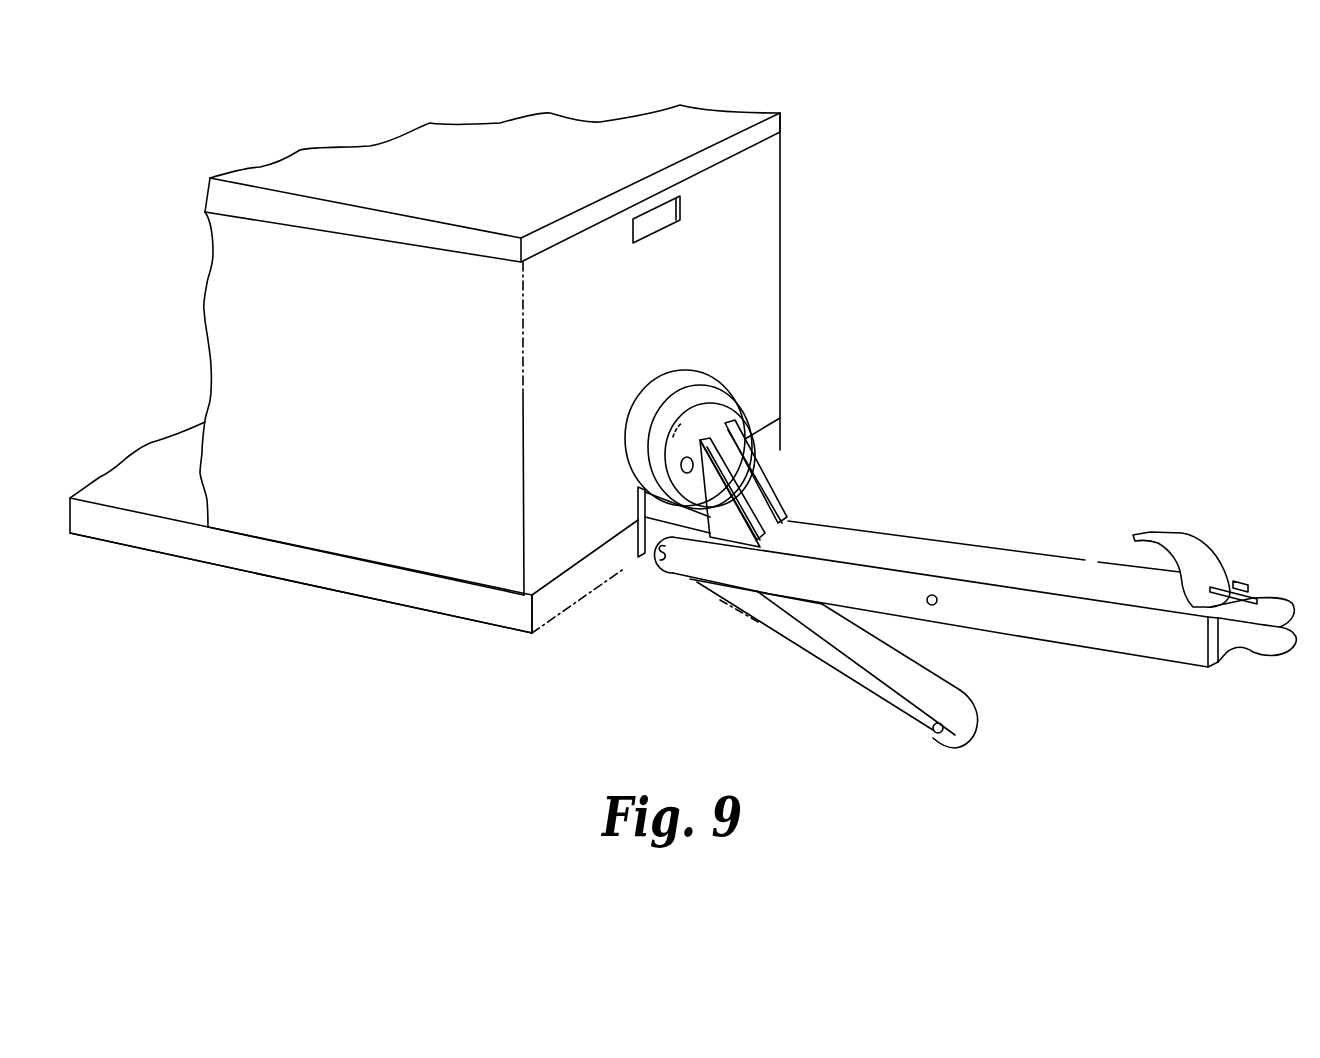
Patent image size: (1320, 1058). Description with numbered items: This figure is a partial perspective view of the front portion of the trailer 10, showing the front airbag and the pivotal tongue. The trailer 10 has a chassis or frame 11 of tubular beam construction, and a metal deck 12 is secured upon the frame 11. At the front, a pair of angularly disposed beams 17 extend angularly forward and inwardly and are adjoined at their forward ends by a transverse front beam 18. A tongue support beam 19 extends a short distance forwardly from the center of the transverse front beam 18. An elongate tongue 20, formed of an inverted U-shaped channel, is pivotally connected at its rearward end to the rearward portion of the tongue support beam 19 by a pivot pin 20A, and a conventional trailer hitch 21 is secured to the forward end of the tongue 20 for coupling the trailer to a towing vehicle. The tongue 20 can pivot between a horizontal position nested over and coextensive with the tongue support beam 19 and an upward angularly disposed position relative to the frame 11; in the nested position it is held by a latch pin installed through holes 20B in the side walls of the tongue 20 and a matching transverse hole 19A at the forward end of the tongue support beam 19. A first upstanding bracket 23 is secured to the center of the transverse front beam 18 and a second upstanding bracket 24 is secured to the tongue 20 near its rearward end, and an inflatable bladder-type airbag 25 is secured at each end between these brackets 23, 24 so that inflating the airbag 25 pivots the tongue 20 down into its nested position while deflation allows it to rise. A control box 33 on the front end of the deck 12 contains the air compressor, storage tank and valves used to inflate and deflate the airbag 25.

The trailer 10 is at (955, 333).
The frame 11 is at (455, 620).
The metal deck 12 is at (155, 455).
The angularly disposed beams 17 is at (360, 587).
The transverse front beam 18 is at (543, 615).
The tongue support beam 19 is at (873, 687).
The transverse hole 19A is at (935, 735).
The tongue 20 is at (1028, 570).
The pivot pin 20A is at (660, 567).
The holes 20B is at (935, 607).
The trailer hitch 21 is at (1273, 597).
The first upstanding bracket 23 is at (638, 503).
The second upstanding bracket 24 is at (757, 443).
The airbag 25 is at (705, 377).
The control box 33 is at (525, 148).